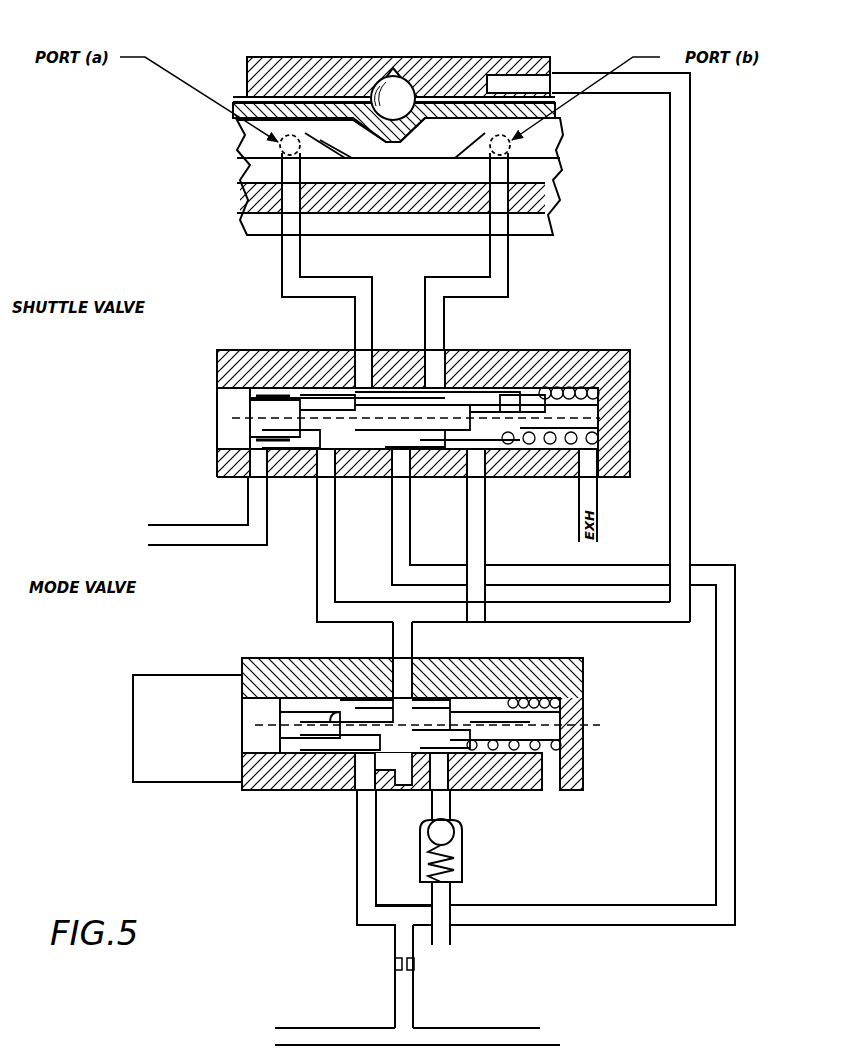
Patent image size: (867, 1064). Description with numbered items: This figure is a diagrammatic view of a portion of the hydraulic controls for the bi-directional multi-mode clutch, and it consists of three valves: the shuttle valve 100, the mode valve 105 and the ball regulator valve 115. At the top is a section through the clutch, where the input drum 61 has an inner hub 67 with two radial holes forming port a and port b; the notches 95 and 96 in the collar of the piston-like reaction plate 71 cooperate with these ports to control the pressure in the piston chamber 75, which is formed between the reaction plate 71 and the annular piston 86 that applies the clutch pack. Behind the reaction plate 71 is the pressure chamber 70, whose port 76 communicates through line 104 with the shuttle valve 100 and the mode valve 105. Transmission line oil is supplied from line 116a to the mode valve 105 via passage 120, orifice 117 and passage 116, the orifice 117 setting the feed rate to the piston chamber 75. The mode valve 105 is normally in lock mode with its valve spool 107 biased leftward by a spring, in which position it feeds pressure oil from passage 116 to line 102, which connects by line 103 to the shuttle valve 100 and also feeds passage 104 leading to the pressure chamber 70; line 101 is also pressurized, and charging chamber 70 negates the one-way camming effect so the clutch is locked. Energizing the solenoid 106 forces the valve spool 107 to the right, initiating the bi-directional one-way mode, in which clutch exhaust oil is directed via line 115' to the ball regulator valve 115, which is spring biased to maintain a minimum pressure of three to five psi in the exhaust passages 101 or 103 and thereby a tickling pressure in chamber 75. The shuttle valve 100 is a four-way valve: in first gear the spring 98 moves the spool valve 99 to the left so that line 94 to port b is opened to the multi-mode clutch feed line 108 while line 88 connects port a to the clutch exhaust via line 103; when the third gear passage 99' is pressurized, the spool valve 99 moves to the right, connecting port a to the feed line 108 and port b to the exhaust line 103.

The input drum 61 is at (320, 82).
The reaction plate 71 is at (430, 78).
The pressure chamber 70 is at (470, 76).
The port 76 is at (513, 87).
The piston chamber 75 is at (535, 168).
The annular piston 86 is at (540, 207).
The line 88 is at (292, 255).
The line 94 is at (500, 250).
The notch 95 is at (323, 152).
The notch 96 is at (458, 152).
The hub 67 is at (420, 172).
The spool valve 99 is at (547, 360).
The spring 98 is at (578, 432).
The shuttle valve 100 is at (191, 379).
The third gear passage 99' is at (207, 511).
The line 101 is at (478, 487).
The line 104 is at (678, 490).
The multi-mode clutch feed line 108 is at (400, 535).
The line 103 is at (327, 595).
The passage or line 102 is at (405, 637).
The mode valve 105 is at (224, 655).
The valve spool 107 is at (460, 718).
The solenoid 106 is at (155, 748).
The passage 116 is at (362, 817).
The line 115' is at (511, 810).
The ball regulator valve 115 is at (535, 882).
The passage 120 is at (403, 982).
The orifice 117 is at (415, 965).
The line 116a is at (470, 1037).